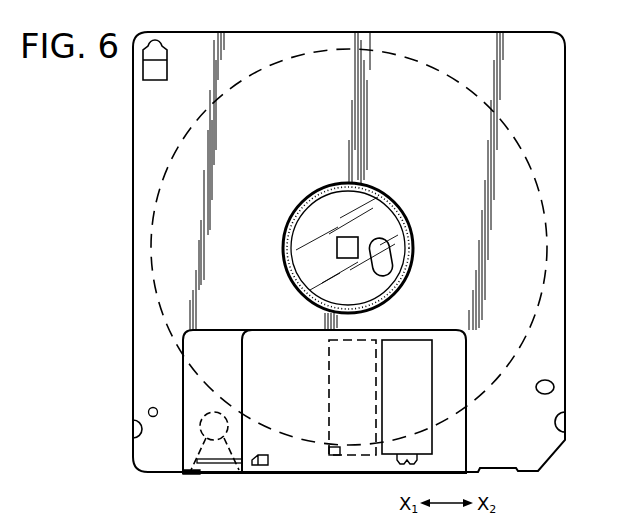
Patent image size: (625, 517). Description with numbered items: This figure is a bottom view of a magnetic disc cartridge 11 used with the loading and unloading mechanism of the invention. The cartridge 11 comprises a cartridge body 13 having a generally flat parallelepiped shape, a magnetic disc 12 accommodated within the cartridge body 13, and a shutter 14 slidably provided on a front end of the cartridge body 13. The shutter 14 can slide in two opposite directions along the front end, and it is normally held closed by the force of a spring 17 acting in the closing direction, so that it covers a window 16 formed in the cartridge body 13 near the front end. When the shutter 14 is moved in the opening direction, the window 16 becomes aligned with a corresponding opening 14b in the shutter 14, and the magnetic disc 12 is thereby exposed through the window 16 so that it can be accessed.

The magnetic disc cartridge 11 is at (538, 23).
The magnetic disc 12 is at (560, 215).
The cartridge body 13 is at (565, 72).
The shutter 14 is at (300, 474).
The opening 14b is at (436, 348).
The window 16 is at (340, 458).
The spring 17 is at (214, 440).